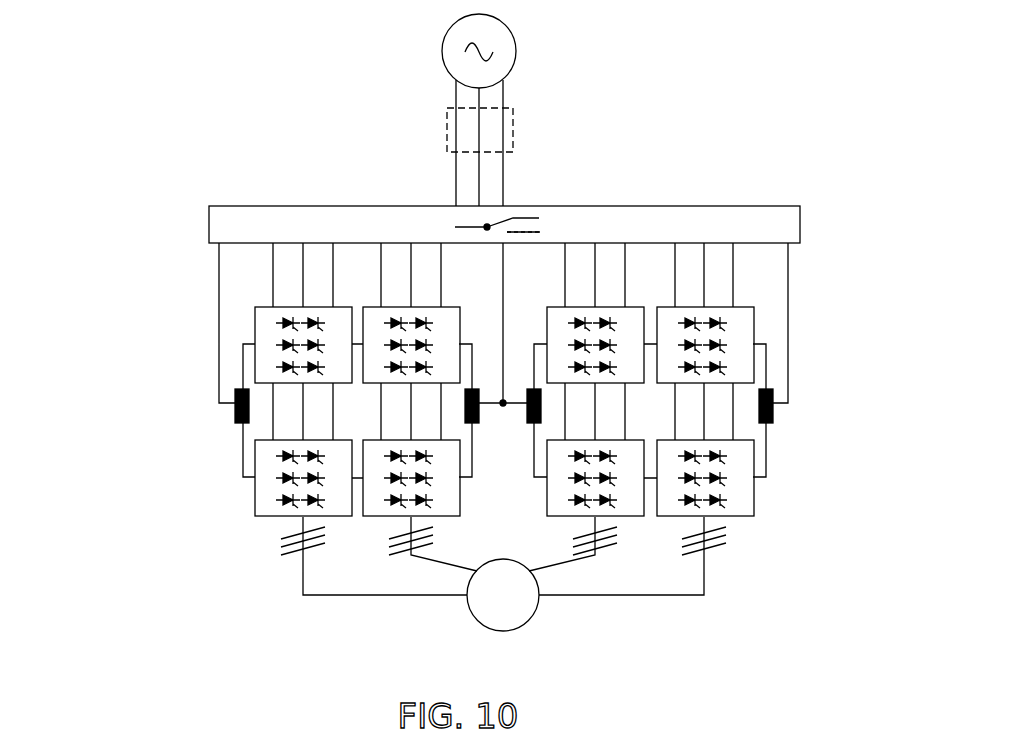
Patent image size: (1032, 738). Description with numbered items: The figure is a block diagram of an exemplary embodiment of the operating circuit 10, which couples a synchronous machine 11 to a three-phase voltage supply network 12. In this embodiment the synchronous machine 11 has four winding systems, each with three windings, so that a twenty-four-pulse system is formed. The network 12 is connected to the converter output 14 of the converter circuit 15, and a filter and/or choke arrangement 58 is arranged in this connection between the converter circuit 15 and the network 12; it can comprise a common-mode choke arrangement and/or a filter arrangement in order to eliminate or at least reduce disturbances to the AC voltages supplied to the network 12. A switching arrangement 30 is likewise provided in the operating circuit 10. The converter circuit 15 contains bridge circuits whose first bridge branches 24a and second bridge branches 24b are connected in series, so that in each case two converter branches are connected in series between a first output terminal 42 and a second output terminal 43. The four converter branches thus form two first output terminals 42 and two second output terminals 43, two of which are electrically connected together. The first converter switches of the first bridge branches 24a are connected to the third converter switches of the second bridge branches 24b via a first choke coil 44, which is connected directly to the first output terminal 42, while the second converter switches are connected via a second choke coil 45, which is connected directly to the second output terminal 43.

The operating circuit 10 is at (747, 57).
The synchronous machine 11 is at (505, 632).
The voltage supply network 12 is at (518, 50).
The converter output 14 is at (443, 520).
The converter circuit 15 is at (165, 337).
The first bridge branch 24a is at (250, 493).
The second bridge branch 24b is at (250, 327).
The switching arrangement 30 is at (802, 222).
The first output terminal 42 is at (217, 373).
The second output terminal 43 is at (494, 396).
The first choke coil 44 is at (236, 410).
The second choke coil 45 is at (488, 412).
The filter and/or choke arrangement 58 is at (514, 128).